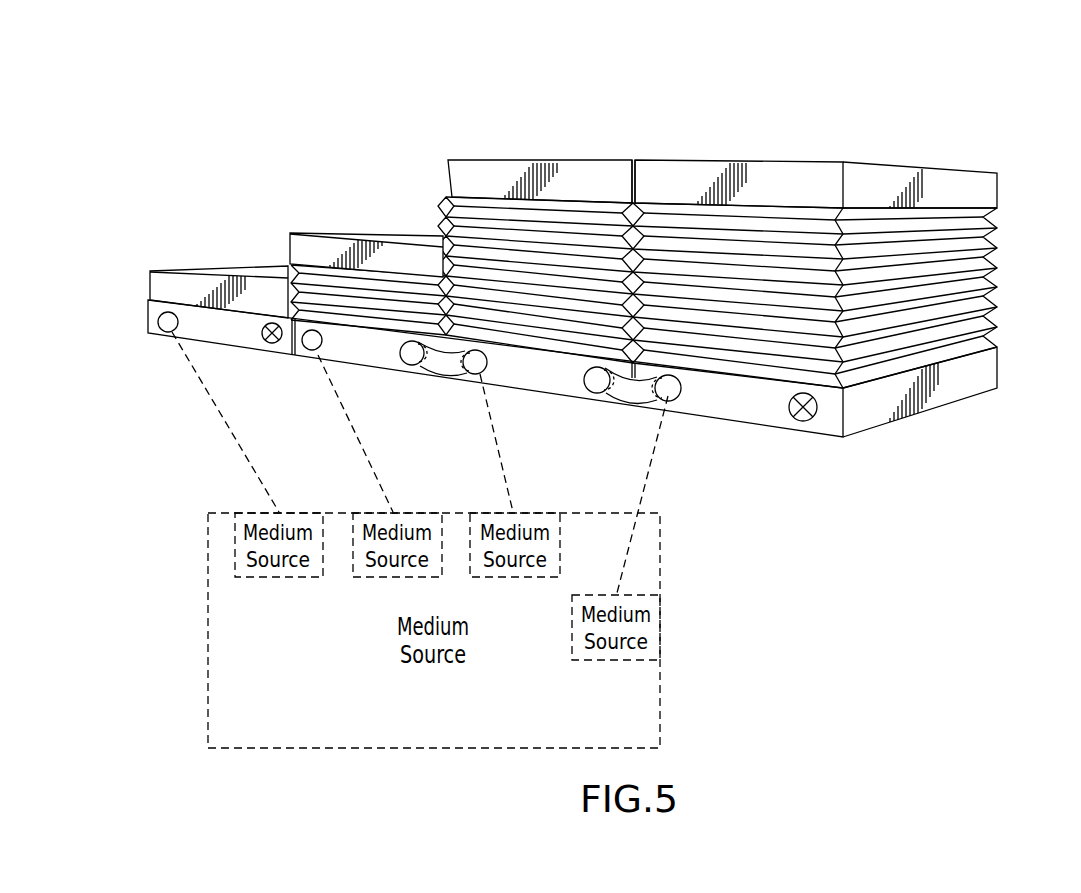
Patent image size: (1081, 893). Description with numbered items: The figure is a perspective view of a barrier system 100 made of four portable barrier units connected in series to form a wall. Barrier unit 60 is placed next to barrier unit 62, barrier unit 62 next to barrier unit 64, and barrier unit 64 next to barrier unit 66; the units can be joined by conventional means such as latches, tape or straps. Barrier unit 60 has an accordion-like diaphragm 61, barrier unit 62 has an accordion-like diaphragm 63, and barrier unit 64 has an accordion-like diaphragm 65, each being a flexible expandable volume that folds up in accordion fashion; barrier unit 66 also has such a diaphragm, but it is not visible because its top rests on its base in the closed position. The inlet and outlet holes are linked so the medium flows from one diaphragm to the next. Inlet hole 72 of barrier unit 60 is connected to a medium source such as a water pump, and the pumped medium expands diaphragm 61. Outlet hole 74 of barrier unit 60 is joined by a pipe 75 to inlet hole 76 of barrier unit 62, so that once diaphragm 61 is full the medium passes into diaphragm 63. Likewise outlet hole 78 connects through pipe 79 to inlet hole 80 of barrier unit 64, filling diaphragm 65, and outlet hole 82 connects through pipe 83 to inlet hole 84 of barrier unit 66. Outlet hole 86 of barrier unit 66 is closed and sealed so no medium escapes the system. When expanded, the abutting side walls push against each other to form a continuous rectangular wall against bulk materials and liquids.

The barrier system 100 is at (572, 270).
The barrier unit 60 is at (750, 162).
The accordion-like diaphragm 61 is at (718, 265).
The barrier unit 62 is at (536, 160).
The accordion-like diaphragm 63 is at (437, 204).
The barrier unit 64 is at (372, 234).
The accordion-like diaphragm 65 is at (285, 266).
The barrier unit 66 is at (205, 270).
The inlet hole 72 is at (813, 427).
The outlet hole 74 is at (653, 415).
The pipe 75 is at (625, 413).
The inlet hole 76 is at (577, 408).
The outlet hole 78 is at (470, 379).
The pipe 79 is at (428, 412).
The inlet hole 80 is at (405, 374).
The outlet hole 82 is at (313, 365).
The pipe 83 is at (289, 361).
The inlet hole 84 is at (263, 357).
The outlet hole 86 is at (153, 342).